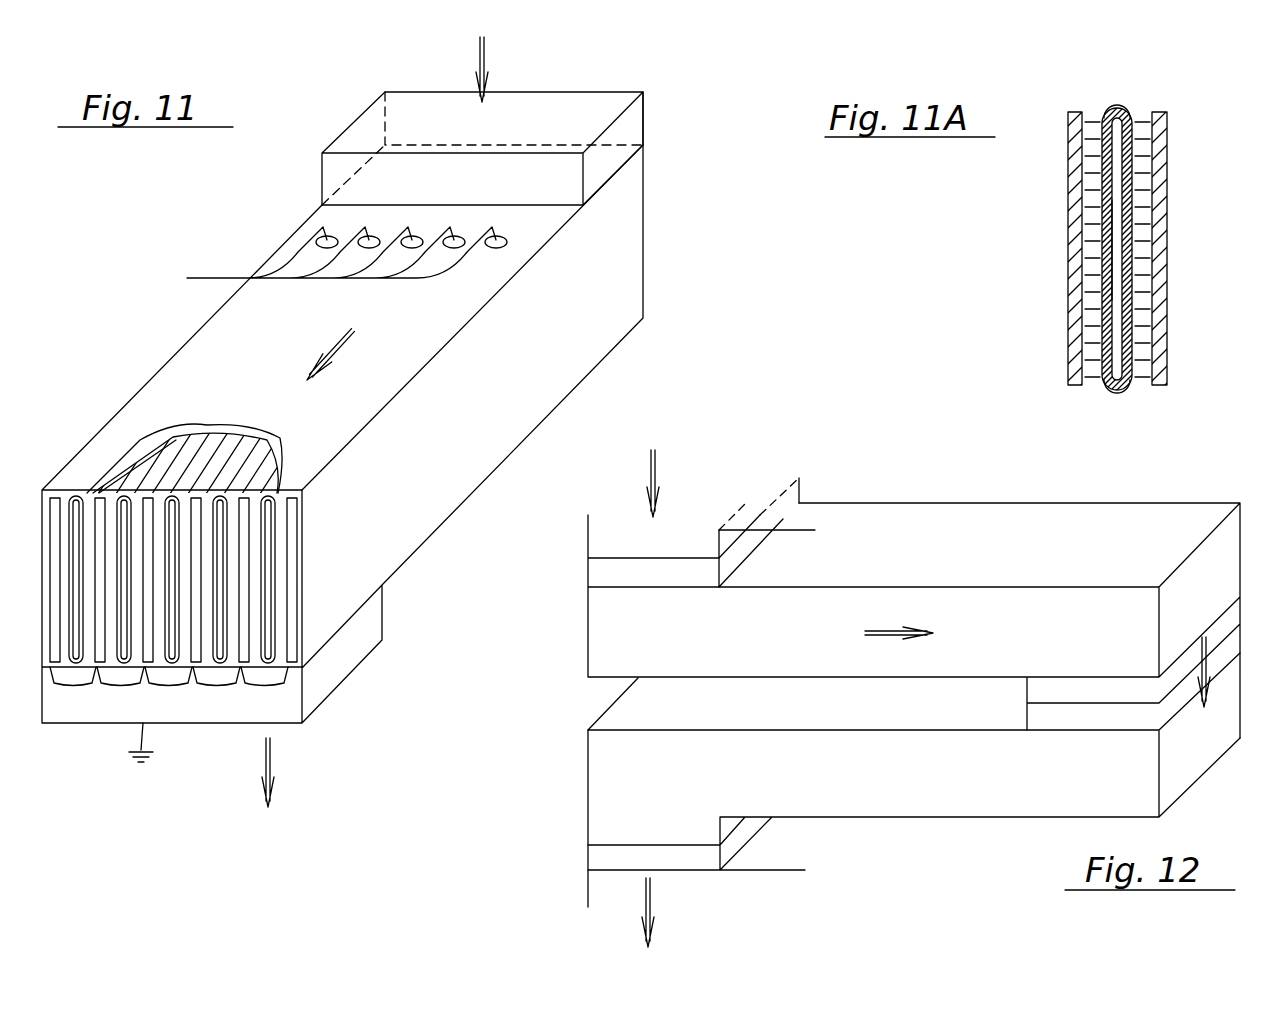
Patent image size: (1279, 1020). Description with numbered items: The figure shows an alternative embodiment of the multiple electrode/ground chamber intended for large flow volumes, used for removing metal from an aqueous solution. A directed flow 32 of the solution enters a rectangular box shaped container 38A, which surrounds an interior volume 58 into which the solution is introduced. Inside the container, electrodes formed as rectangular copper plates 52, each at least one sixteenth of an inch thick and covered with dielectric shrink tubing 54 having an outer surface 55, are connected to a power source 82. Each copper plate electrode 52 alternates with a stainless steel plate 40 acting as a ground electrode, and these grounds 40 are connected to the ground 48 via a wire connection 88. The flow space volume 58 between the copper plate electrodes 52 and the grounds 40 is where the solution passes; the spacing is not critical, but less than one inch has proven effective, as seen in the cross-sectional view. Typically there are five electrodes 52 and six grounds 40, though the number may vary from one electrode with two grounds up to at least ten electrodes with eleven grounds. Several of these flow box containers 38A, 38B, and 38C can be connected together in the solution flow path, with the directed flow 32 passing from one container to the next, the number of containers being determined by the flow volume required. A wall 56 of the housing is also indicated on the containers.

In FIG. 11, the directed flow 32 is at (396, 422).
In FIG. 12, the directed flow 32 is at (931, 698).
In FIG. 11, the rectangular box shaped container 38A is at (342, 407).
In FIG. 12, the flow box container 38B is at (914, 608).
In FIG. 12, the flow box container 38C is at (914, 761).
In FIG. 11, the stainless steel plate 40 is at (288, 493).
In FIG. 11A, the stainless steel plate 40 is at (1068, 333).
In FIG. 11, the ground 48 is at (142, 758).
In FIG. 11, the copper plate electrode 52 is at (250, 453).
In FIG. 11A, the copper plate electrode 52 is at (1105, 383).
In FIG. 11A, the dielectric shrink tubing 54 is at (1132, 297).
In FIG. 11A, the outer surface 55 is at (1112, 110).
In FIG. 11, the housing wall 56 is at (432, 503).
In FIG. 12, the housing wall 56 is at (569, 818).
In FIG. 11A, the flow space volume 58 is at (1220, 266).
In FIG. 11, the power source 82 is at (337, 252).
In FIG. 11A, the power source 82 is at (1113, 387).
In FIG. 11, the wire connection 88 is at (168, 685).